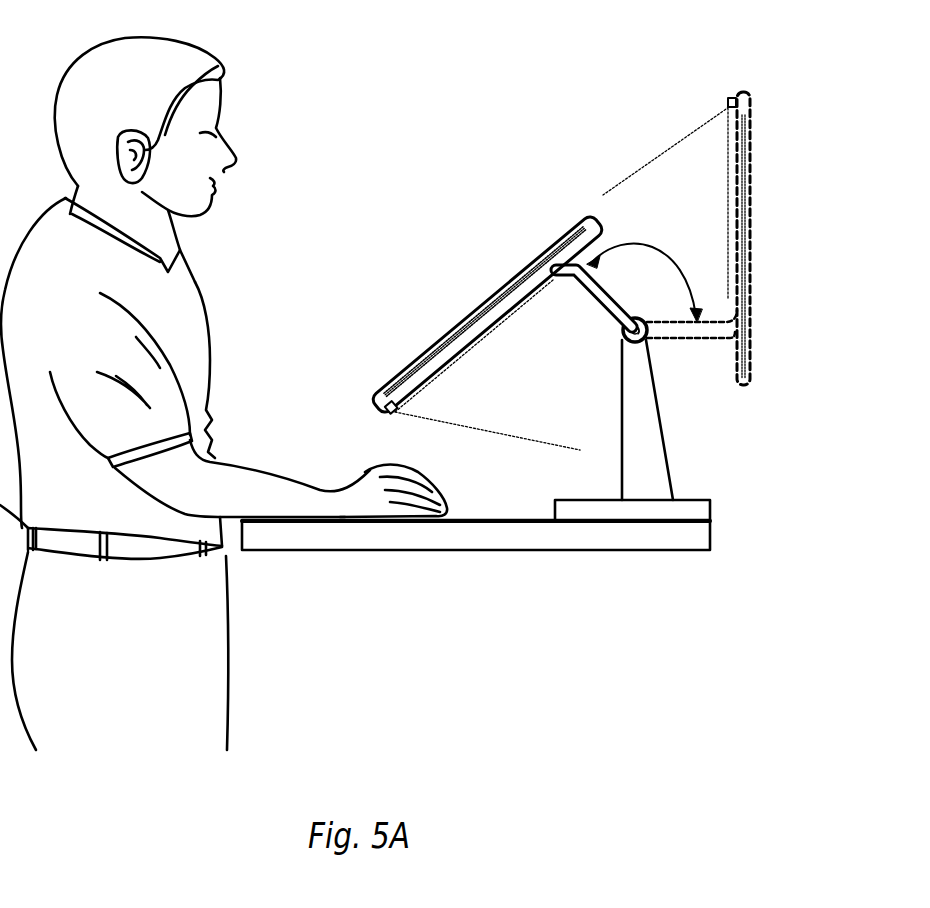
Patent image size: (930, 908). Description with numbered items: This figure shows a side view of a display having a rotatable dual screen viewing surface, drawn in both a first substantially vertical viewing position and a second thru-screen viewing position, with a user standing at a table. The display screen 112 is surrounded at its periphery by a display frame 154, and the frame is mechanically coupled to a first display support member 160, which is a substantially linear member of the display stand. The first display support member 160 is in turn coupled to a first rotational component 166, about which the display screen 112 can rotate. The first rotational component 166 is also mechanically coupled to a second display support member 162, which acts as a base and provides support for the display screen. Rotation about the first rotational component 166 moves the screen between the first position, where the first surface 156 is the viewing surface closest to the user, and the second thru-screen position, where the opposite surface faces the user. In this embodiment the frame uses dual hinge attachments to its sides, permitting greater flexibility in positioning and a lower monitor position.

The display screen 112 is at (560, 253).
The display frame 154 is at (373, 408).
The first surface 156 is at (500, 318).
The first display support member 160 is at (612, 296).
The second display support member 162 is at (655, 456).
The first rotational component 166 is at (648, 340).